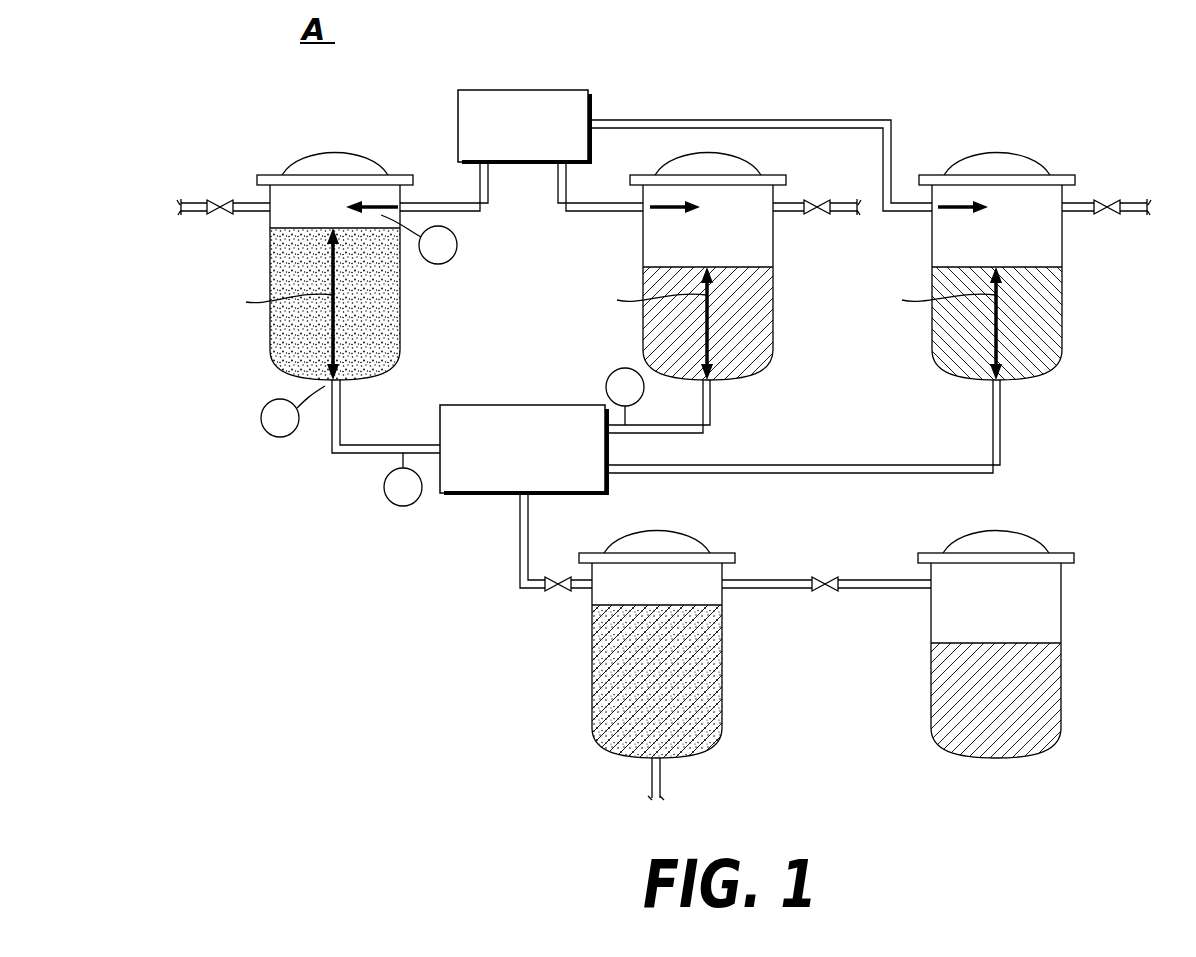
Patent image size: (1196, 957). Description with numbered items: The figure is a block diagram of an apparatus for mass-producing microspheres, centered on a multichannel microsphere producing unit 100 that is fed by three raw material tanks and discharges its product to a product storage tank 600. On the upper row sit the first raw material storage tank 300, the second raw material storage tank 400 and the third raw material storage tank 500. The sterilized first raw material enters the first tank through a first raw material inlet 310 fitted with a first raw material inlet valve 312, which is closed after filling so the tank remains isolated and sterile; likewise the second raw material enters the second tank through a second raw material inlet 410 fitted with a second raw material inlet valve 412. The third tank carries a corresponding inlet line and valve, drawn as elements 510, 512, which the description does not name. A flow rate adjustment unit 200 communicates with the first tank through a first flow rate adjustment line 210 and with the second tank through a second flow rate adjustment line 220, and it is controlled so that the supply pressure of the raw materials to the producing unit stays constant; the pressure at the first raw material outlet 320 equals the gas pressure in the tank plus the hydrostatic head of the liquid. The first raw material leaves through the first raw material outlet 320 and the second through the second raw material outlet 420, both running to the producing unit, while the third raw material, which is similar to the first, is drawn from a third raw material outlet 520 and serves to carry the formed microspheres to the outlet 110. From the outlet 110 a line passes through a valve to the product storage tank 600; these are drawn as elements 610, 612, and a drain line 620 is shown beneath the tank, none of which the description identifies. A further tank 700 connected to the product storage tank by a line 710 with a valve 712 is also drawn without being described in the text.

The multichannel microsphere producing unit 100 is at (553, 405).
The outlet 110 is at (519, 552).
The flow rate adjustment unit 200 is at (556, 90).
The first flow rate adjustment line 210 is at (489, 183).
The second flow rate adjustment line 220 is at (567, 183).
The first raw material storage tank 300 is at (401, 288).
The first raw material inlet 310 is at (247, 203).
The first raw material inlet valve 312 is at (220, 200).
The first raw material outlet 320 is at (341, 408).
The second raw material storage tank 400 is at (774, 288).
The second raw material inlet 410 is at (792, 201).
The second raw material inlet valve 412 is at (826, 203).
The second raw material outlet 420 is at (711, 408).
The third raw material storage tank 500 is at (1062, 288).
The third gas inlet pipe 510 is at (1082, 201).
The third valve 512 is at (1116, 203).
The third raw material outlet 520 is at (1001, 408).
The product storage tank 600 is at (723, 630).
The collection inlet pipe 610 is at (579, 591).
The collection valve 612 is at (549, 593).
The drain pipe 620 is at (661, 775).
The washing solution tank 700 is at (1029, 530).
The washing solution pipe 710 is at (786, 565).
The washing solution valve 712 is at (835, 580).